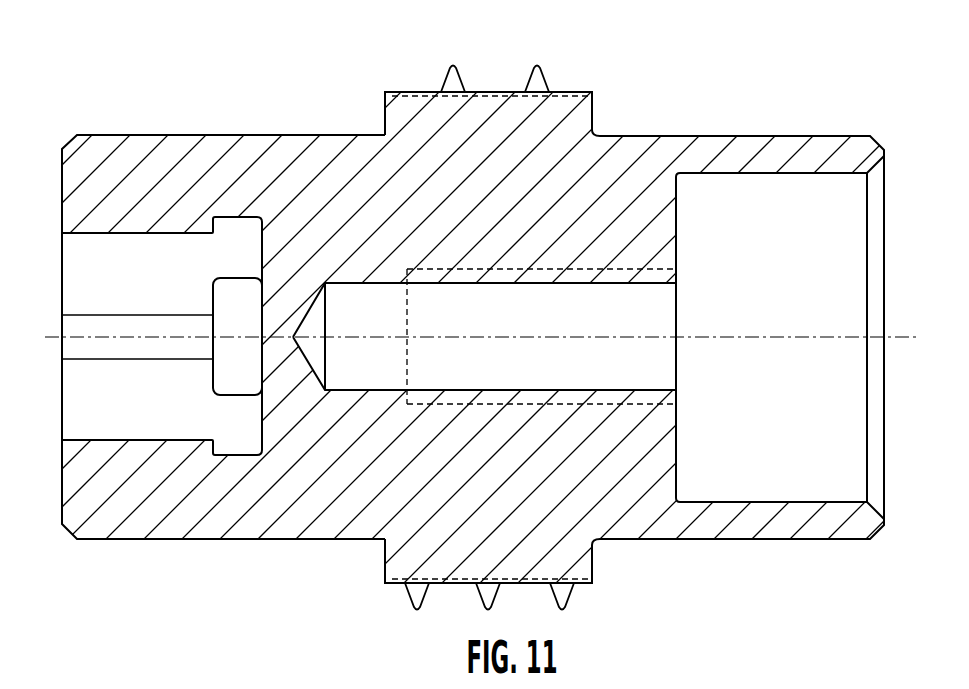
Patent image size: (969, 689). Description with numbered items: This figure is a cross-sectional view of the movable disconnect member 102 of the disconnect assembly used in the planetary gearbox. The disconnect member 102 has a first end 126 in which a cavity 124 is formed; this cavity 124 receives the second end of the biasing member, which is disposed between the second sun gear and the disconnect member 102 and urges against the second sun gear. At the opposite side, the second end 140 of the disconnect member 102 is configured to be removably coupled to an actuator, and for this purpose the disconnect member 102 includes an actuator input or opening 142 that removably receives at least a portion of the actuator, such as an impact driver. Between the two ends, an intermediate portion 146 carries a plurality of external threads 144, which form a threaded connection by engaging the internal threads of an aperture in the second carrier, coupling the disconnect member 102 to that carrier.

The disconnect member 102 is at (164, 62).
The cavity 124 is at (760, 173).
The first end 126 is at (716, 136).
The second end 140 is at (207, 135).
The actuator input or opening 142 is at (91, 440).
The external threads 144 is at (543, 70).
The intermediate portion 146 is at (385, 563).